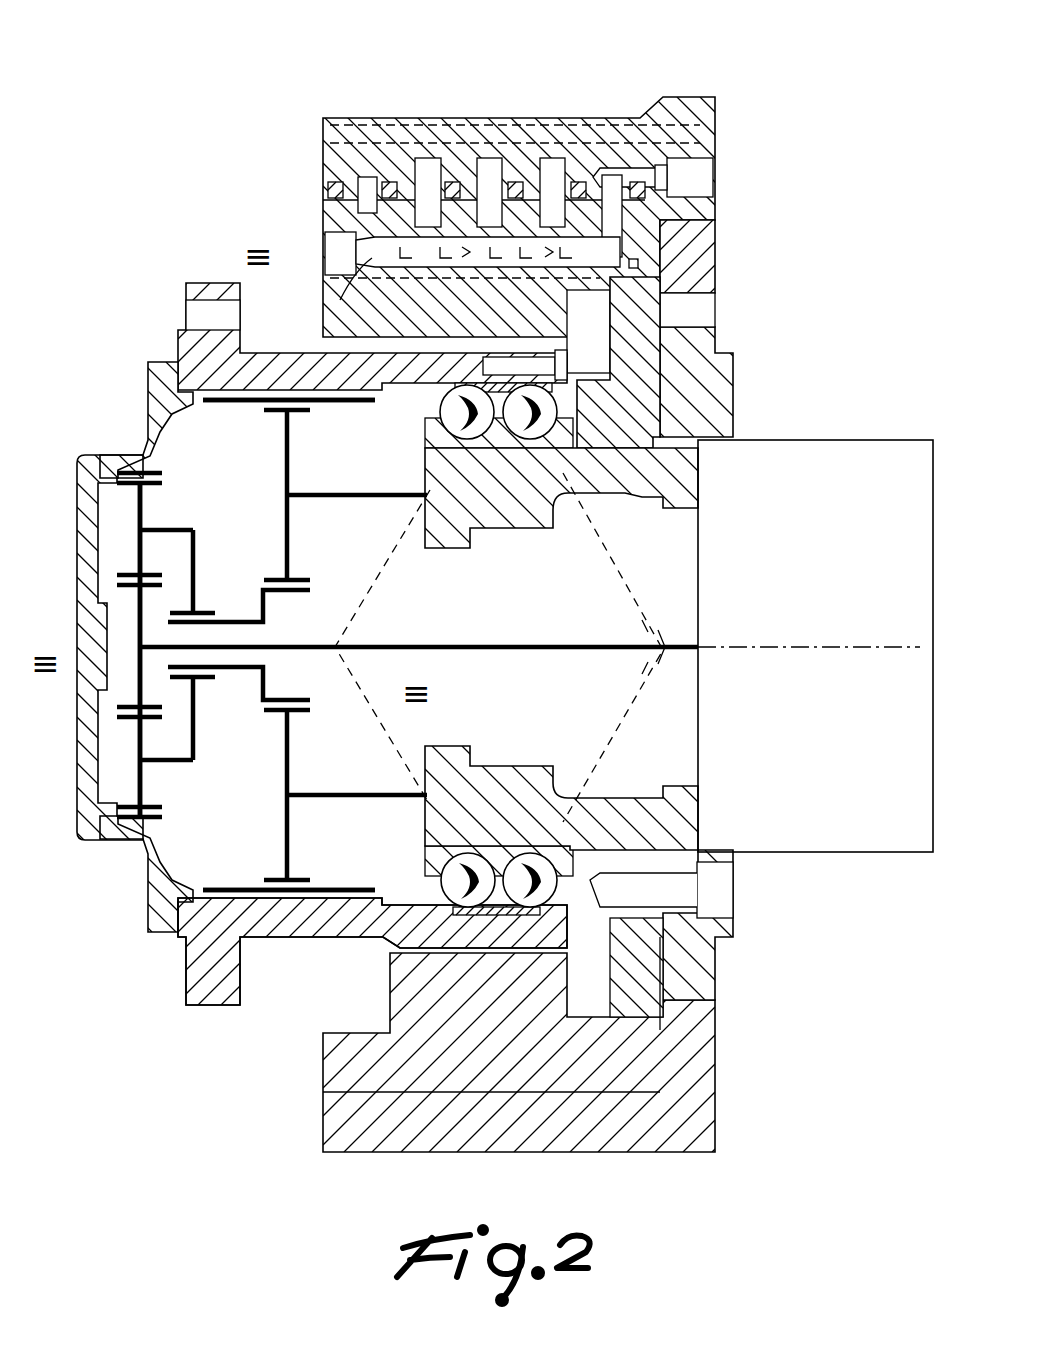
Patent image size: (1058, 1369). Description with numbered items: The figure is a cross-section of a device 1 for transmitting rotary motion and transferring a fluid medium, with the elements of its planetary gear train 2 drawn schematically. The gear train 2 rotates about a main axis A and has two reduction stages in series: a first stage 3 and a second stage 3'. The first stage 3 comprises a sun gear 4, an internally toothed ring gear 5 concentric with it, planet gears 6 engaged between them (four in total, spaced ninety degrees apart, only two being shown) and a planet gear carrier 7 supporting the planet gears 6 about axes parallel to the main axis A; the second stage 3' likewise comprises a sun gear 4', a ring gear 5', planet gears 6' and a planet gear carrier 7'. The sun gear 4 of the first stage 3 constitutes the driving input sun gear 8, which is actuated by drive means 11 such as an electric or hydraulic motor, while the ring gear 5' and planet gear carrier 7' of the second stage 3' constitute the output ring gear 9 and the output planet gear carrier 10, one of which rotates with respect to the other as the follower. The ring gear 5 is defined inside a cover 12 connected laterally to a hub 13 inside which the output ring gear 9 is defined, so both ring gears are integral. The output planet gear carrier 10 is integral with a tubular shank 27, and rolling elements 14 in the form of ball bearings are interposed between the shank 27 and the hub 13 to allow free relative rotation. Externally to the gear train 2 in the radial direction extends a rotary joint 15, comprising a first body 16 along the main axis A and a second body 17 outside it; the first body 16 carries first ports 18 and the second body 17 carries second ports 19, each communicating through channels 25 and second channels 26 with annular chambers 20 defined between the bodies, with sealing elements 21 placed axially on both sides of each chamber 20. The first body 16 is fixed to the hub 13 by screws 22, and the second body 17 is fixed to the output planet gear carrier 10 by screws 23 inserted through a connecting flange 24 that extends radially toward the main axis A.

The device for the transmission of rotary motion and the transfer of at least one fl 1 is at (147, 205).
The planetary gear train 2 is at (145, 945).
The first reduction stage 3 is at (122, 655).
The second reduction stage 3' is at (372, 978).
The sun gear 4 is at (99, 649).
The sun gear 4' is at (419, 504).
The ring gear 5 is at (125, 424).
The ring gear 5' is at (289, 318).
The planet gears 6 is at (95, 651).
The planet gears 6' is at (313, 645).
The planet gear carrier 7 is at (205, 718).
The planet gear carrier 7' is at (332, 781).
The input sun gear 8 is at (137, 672).
The output ring gear 9 is at (276, 396).
The output planet gear carrier 10 is at (376, 790).
The drive means 11 is at (898, 797).
The cover 12 is at (88, 635).
The hub 13 is at (332, 912).
The rolling elements 14 is at (572, 401).
The rotary joint 15 is at (305, 128).
The first body 16 is at (430, 312).
The second body 17 is at (688, 104).
The first port 18 is at (323, 232).
The second port 19 is at (717, 170).
The annular chamber 20 is at (368, 182).
The sealing elements 21 is at (390, 182).
The first mechanical connection means 22 is at (566, 368).
The second mechanical connection means 23 is at (668, 890).
The connecting flange 24 is at (690, 985).
The channels 25 is at (342, 298).
The second channels 26 is at (664, 180).
The tubular shank 27 is at (490, 790).
The main axis A is at (810, 645).